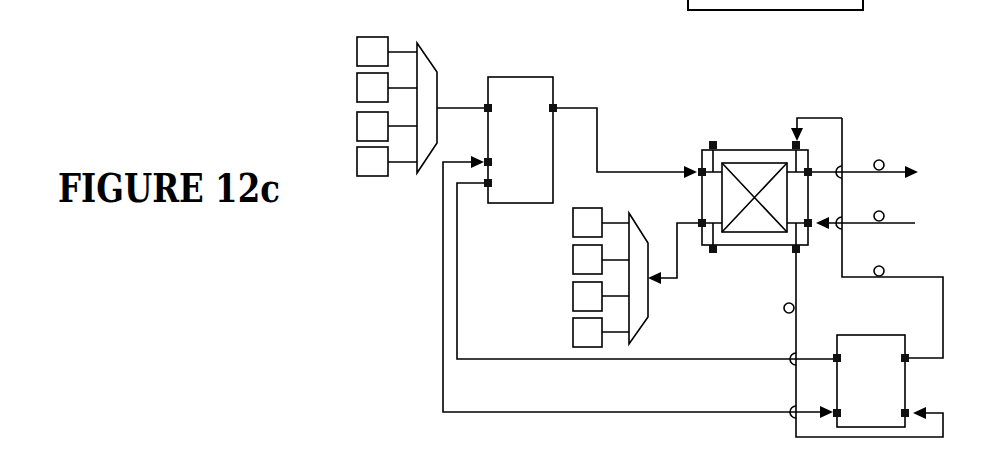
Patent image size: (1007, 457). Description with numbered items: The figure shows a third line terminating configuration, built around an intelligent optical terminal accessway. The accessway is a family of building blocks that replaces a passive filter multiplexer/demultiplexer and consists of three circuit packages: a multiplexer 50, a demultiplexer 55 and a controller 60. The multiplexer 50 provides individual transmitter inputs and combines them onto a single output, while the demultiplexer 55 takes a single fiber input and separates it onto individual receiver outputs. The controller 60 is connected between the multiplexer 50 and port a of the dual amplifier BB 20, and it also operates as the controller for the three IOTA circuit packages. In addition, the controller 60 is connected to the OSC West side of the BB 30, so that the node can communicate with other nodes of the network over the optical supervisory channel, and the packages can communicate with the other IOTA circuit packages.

The dual amplifier BB 20 is at (736, 150).
The BB 30 is at (905, 388).
The multiplexer 50 is at (436, 66).
The demultiplexer 55 is at (648, 297).
The controller 60 is at (520, 77).